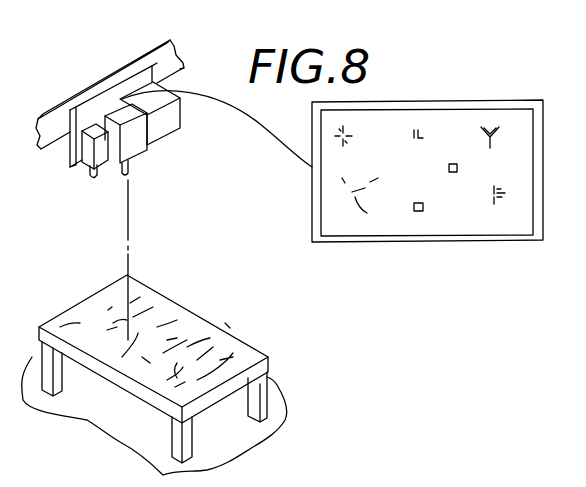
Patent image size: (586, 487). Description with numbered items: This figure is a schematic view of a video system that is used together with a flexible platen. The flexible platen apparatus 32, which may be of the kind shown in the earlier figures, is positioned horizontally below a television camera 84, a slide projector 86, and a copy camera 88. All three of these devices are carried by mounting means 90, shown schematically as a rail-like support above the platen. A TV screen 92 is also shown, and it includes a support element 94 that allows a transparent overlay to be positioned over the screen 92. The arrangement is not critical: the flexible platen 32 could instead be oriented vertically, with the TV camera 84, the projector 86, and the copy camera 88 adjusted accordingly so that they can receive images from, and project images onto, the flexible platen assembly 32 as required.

The flexible platen apparatus 32 is at (202, 310).
The television camera 84 is at (95, 153).
The slide projector 86 is at (138, 145).
The camera 88 is at (167, 125).
The mounting means 90 is at (108, 90).
The TV screen 92 is at (467, 118).
The support element 94 is at (390, 240).